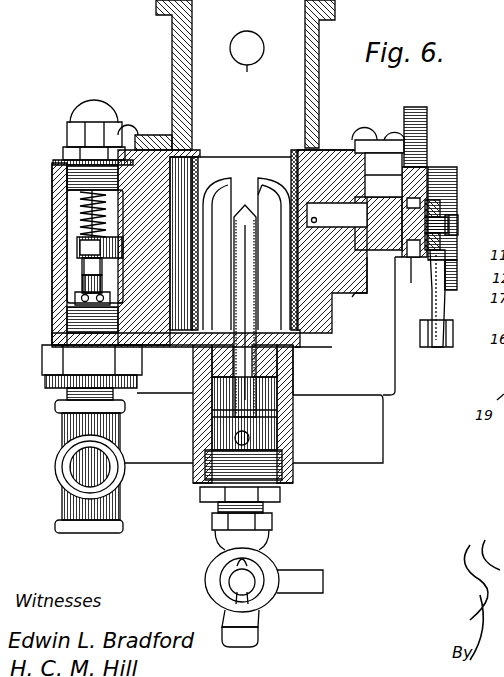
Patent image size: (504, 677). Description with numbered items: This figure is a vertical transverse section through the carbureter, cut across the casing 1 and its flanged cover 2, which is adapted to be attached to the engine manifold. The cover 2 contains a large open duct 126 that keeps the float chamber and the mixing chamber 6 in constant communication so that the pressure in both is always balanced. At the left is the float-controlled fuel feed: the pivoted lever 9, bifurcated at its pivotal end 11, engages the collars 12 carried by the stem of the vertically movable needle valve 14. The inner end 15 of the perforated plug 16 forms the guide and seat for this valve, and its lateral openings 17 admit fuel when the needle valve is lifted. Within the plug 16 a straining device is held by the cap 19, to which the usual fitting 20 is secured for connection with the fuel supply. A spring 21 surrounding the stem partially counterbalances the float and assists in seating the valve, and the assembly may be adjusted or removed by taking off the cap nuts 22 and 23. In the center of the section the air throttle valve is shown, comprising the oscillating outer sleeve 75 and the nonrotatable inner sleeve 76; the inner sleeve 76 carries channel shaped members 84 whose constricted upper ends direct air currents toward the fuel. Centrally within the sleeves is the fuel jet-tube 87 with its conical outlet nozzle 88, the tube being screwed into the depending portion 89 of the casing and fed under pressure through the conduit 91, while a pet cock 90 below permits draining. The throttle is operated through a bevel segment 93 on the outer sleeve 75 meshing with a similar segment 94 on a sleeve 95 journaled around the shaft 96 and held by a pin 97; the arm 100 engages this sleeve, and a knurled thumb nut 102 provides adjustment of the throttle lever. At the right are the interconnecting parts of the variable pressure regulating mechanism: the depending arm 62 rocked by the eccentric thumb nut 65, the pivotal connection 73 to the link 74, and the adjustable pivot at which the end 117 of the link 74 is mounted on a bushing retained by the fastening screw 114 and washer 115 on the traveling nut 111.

The casing 1 is at (405, 377).
The flanged cover 2 is at (150, 135).
The mixing chamber 6 is at (245, 160).
The pivoted lever 9 is at (112, 240).
The pivotal end 11 is at (84, 252).
The collars 12 is at (80, 240).
The needle valve 14 is at (75, 300).
The inner end 15 is at (102, 285).
The perforated plug 16 is at (67, 333).
The lateral openings 17 is at (124, 306).
The cap 19 is at (60, 382).
The fitting 20 is at (62, 435).
The spring 21 is at (80, 213).
The cap nut 22 is at (90, 100).
The cap nut 23 is at (56, 163).
The depending arm 62 is at (455, 195).
The adjusting thumb nut 65 is at (465, 270).
The pivotal connection 73 is at (440, 347).
The link 74 is at (447, 305).
The outer sleeve 75 is at (198, 190).
The inner sleeve 76 is at (200, 172).
The channel shaped members 84 is at (215, 262).
The fuel jet-tube 87 is at (300, 350).
The outlet nozzle 88 is at (247, 205).
The depending portion 89 is at (295, 372).
The pet cock 90 is at (270, 553).
The conduit 91 is at (249, 438).
The bevel segment 93 is at (262, 188).
The segment 94 is at (383, 175).
The sleeve 95 is at (383, 184).
The shaft 96 is at (371, 275).
The pin 97 is at (316, 218).
The arm 100 is at (376, 290).
The knurled thumb nut 102 is at (428, 118).
The traveling nut 111 is at (418, 280).
The fastening screw 114 is at (458, 220).
The washer 115 is at (445, 205).
The end of link 117 is at (435, 200).
The open duct 126 is at (250, 64).